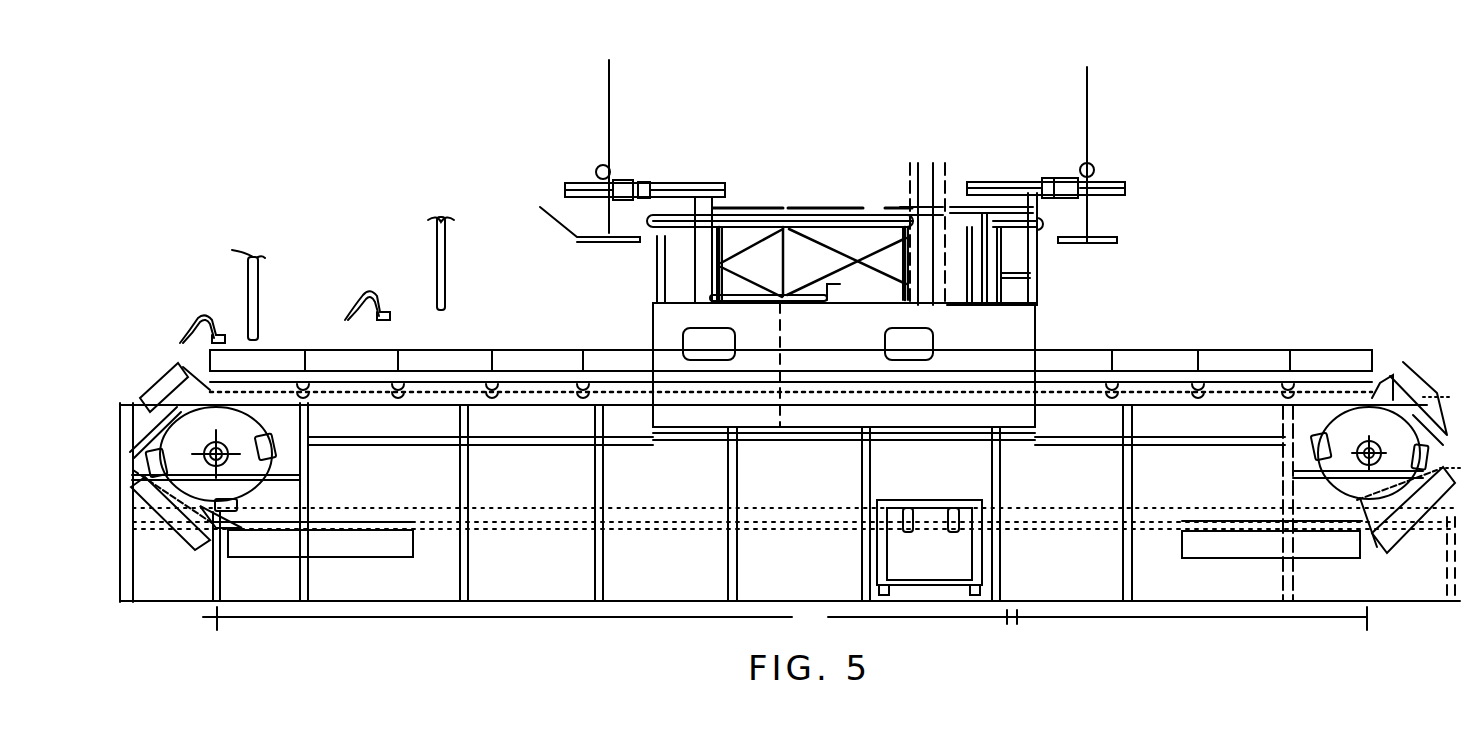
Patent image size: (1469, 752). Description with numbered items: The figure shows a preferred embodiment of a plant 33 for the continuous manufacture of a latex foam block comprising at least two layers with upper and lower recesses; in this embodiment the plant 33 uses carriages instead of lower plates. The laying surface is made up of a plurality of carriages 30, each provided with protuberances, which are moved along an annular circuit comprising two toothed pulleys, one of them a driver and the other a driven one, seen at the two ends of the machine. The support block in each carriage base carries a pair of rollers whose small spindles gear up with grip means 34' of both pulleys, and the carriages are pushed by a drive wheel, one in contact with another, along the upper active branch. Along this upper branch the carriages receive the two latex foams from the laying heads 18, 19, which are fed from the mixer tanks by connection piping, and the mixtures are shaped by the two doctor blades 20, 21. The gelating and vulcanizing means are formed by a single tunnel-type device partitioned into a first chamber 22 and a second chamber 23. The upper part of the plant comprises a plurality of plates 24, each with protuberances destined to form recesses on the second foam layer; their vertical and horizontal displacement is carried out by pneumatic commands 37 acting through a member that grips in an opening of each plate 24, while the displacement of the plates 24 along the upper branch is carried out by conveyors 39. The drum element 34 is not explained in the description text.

The laying head 18 is at (197, 315).
The laying head 19 is at (367, 285).
The shaping doctor blade 20 is at (253, 302).
The shaping doctor blade 21 is at (442, 223).
The first chamber 22 is at (716, 365).
The second chamber 23 is at (907, 365).
The plate 24 is at (572, 235).
The carriage 30 is at (1130, 356).
The plant 33 is at (562, 144).
The drum 34 is at (222, 539).
The grip means 34' is at (315, 465).
The pneumatic command 37 is at (627, 155).
The conveyor 39 is at (866, 215).